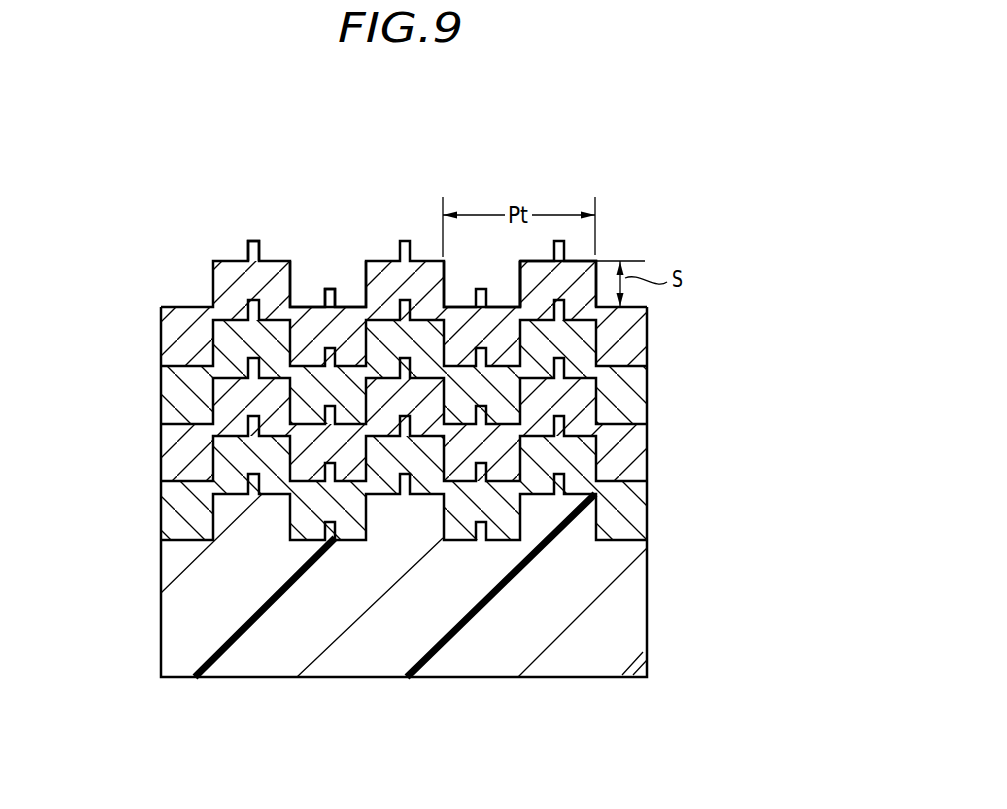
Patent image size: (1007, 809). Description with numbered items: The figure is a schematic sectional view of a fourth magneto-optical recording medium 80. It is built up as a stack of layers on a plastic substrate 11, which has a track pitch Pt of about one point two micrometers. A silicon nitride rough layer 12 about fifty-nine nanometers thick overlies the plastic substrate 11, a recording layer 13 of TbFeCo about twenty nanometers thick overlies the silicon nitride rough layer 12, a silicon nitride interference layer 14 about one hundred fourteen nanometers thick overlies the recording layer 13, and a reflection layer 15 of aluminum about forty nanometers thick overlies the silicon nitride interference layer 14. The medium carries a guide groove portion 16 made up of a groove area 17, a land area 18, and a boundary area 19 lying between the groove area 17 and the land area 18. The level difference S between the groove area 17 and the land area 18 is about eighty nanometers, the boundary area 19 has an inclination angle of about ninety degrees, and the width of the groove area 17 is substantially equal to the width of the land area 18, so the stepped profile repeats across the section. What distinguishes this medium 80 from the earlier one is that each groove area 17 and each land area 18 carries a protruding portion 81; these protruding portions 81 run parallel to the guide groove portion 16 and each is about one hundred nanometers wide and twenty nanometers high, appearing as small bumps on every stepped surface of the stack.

The magneto-optical recording medium 80 is at (472, 380).
The protruding portion 81 is at (325, 290).
The guide groove portion 16 is at (346, 303).
The groove area 17 is at (497, 303).
The boundary area 19 is at (513, 283).
The land area 18 is at (601, 239).
The reflection layer 15 is at (630, 332).
The silicon nitride interference layer 14 is at (628, 395).
The recording layer 13 is at (645, 460).
The silicon nitride rough layer 12 is at (633, 502).
The plastic substrate 11 is at (620, 638).